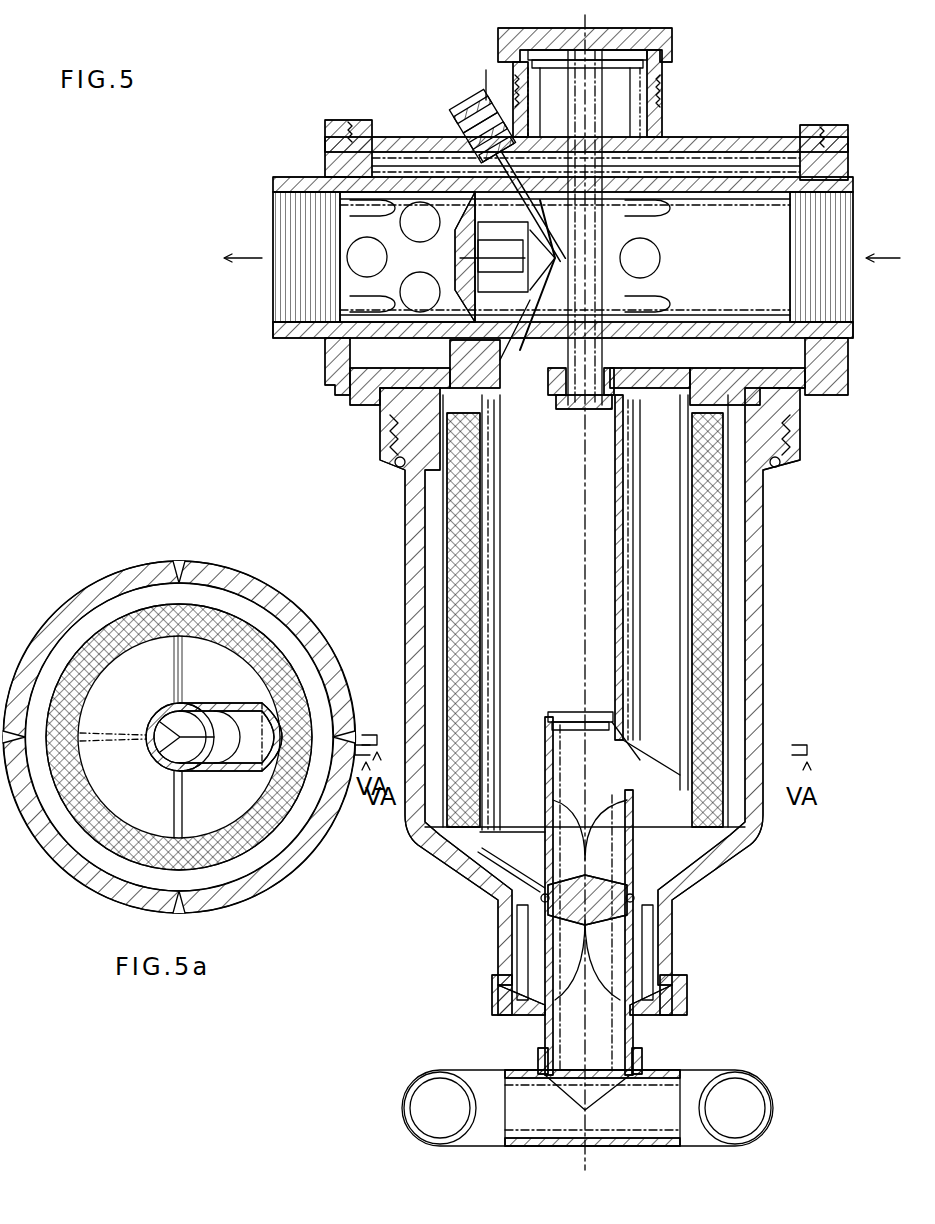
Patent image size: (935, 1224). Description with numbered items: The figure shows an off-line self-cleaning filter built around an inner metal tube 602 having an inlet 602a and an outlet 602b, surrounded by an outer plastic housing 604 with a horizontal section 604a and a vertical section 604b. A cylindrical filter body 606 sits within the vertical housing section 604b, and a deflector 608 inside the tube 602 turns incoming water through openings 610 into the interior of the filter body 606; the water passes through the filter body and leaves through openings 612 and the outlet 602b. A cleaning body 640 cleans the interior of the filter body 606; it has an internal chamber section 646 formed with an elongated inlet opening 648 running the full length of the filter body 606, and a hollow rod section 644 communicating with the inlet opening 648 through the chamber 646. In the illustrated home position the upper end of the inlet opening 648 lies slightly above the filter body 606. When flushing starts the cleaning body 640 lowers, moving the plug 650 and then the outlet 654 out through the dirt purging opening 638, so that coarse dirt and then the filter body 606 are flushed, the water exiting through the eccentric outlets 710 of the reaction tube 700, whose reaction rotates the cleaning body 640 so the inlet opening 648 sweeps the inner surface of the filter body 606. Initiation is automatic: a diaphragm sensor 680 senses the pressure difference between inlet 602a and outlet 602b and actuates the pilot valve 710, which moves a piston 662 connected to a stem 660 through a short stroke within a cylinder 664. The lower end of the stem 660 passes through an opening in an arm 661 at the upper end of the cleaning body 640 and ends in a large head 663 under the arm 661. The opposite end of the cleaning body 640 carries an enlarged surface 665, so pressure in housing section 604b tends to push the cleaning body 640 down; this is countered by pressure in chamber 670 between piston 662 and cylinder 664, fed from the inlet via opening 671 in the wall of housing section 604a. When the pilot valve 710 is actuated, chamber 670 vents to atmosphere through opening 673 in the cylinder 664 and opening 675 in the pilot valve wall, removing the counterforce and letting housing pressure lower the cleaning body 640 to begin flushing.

In FIG. 5, the inner metal tube 602 is at (853, 180).
In FIG. 5, the inlet 602a is at (845, 338).
In FIG. 5, the outlet 602b is at (278, 338).
In FIG. 5, the outer plastic housing 604 is at (770, 137).
In FIG. 5, the horizontal housing section 604a is at (695, 137).
In FIG. 5, the vertical housing section 604b is at (757, 672).
In FIG. 5a, the vertical housing section 604b is at (262, 588).
In FIG. 5, the cylindrical filter body 606 is at (715, 622).
In FIG. 5a, the cylindrical filter body 606 is at (295, 660).
In FIG. 5, the deflector 608 is at (570, 260).
In FIG. 5, the openings 610 is at (650, 308).
In FIG. 5, the openings 612 is at (360, 308).
In FIG. 5, the dirt purging opening 638 is at (545, 890).
In FIG. 5, the cleaning body 640 is at (612, 535).
In FIG. 5a, the cleaning body 640 is at (150, 712).
In FIG. 5, the hollow rod section 644 is at (545, 757).
In FIG. 5a, the hollow rod section 644 is at (148, 760).
In FIG. 5, the internal chamber section 646 is at (672, 613).
In FIG. 5a, the internal chamber section 646 is at (262, 733).
In FIG. 5, the inlet opening 648 is at (680, 498).
In FIG. 5a, the inlet opening 648 is at (262, 771).
In FIG. 5, the plug 650 is at (672, 895).
In FIG. 5, the outlet 654 is at (628, 845).
In FIG. 5, the stem 660 is at (603, 352).
In FIG. 5, the arm 661 is at (550, 398).
In FIG. 5, the piston 662 is at (672, 40).
In FIG. 5, the head 663 is at (572, 410).
In FIG. 5, the cylinder 664 is at (662, 92).
In FIG. 5, the enlarged surface 665 is at (565, 712).
In FIG. 5, the chamber 670 is at (621, 102).
In FIG. 5, the opening 671 is at (548, 128).
In FIG. 5, the opening 673 is at (513, 127).
In FIG. 5, the opening 675 is at (466, 132).
In FIG. 5, the diaphragm sensor 680 is at (520, 345).
In FIG. 5, the reaction tube 700 is at (686, 1072).
In FIG. 5, the pilot valve / eccentric outlets 710 is at (462, 120).